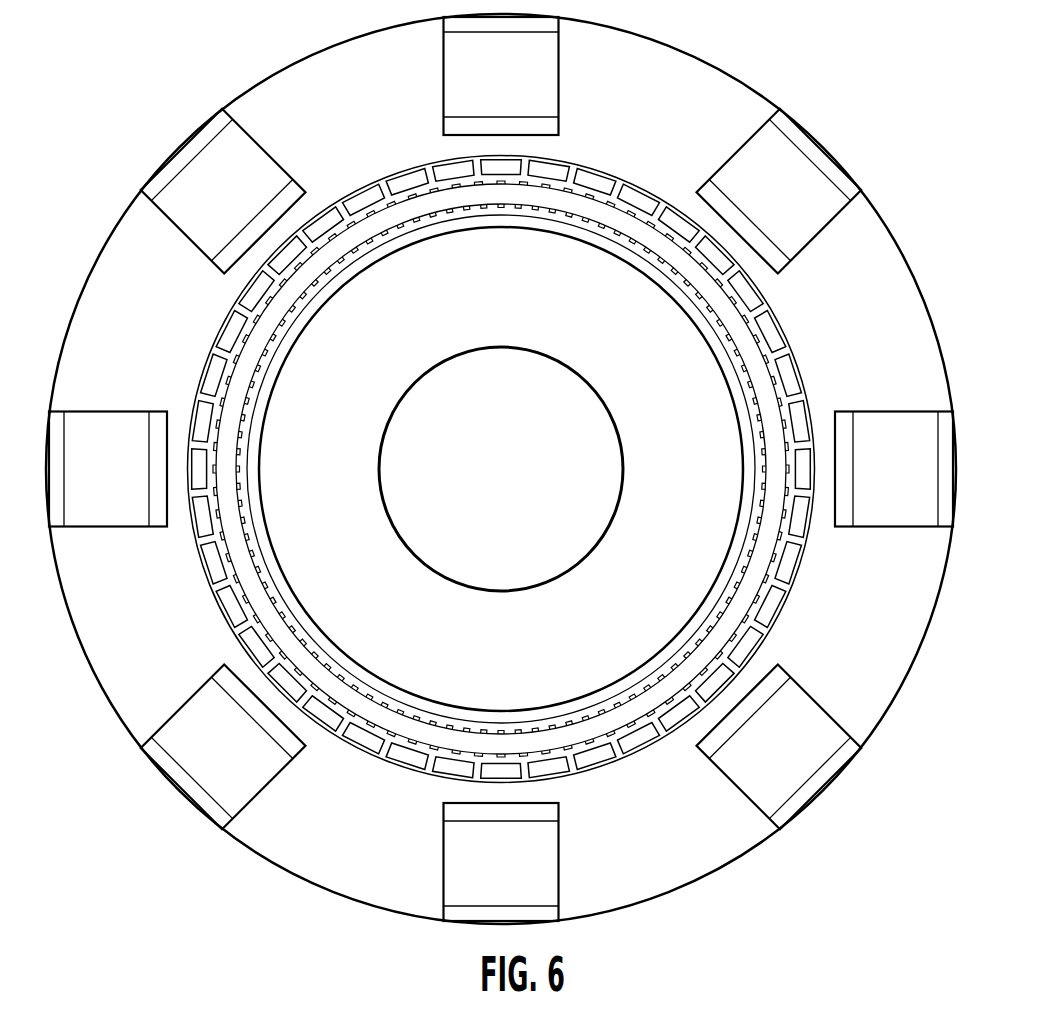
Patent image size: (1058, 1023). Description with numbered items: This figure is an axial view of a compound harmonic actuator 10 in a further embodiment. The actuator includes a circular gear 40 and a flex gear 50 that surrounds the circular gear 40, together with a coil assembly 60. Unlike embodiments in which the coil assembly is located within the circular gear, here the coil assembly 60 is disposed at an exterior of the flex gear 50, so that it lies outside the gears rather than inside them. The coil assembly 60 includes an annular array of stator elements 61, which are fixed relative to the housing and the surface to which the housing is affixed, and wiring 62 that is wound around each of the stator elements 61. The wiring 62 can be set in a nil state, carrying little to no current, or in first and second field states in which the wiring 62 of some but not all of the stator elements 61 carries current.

The compound harmonic actuator 10 is at (140, 142).
The circular gear 40 is at (418, 707).
The flex gear 50 is at (238, 562).
The coil assembly 60 is at (882, 228).
The stator elements 61 is at (792, 720).
The wiring 62 is at (457, 910).